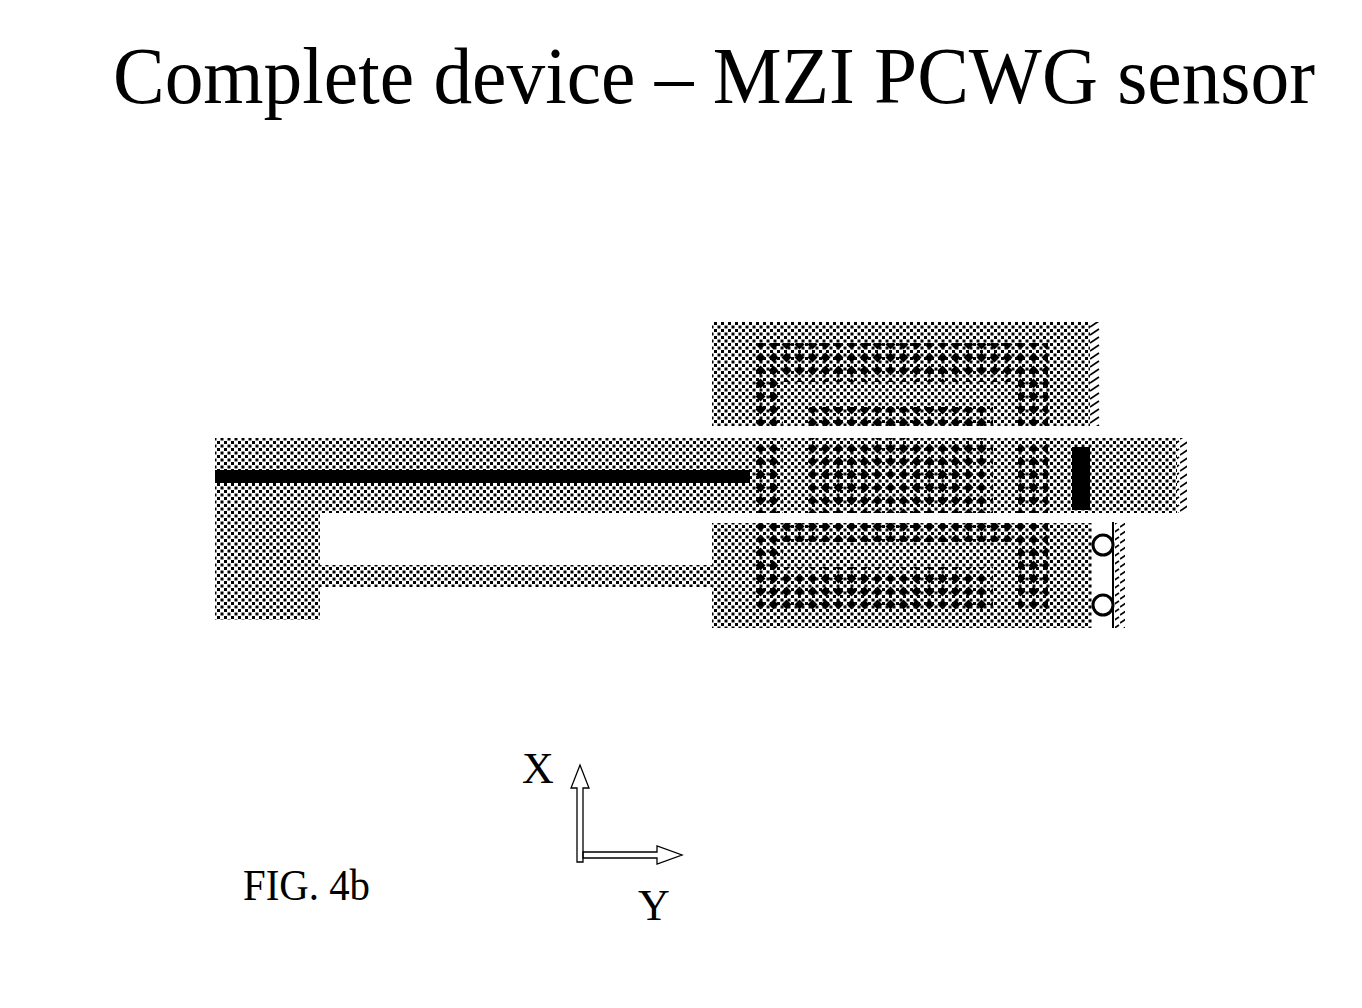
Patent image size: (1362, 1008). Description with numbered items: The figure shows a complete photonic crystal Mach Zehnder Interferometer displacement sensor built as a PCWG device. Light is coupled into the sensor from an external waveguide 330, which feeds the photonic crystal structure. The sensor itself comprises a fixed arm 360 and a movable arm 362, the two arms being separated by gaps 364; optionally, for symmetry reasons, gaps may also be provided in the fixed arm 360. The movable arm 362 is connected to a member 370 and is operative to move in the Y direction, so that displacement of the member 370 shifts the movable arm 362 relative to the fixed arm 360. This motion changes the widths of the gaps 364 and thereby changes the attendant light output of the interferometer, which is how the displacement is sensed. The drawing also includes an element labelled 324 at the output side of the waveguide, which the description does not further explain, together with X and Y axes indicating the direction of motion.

The external waveguide 330 is at (487, 440).
The fixed arm 360 is at (893, 388).
The output waveguide 324 is at (1143, 443).
The member 370 is at (520, 577).
The gaps 364 is at (920, 627).
The movable arm 362 is at (915, 600).